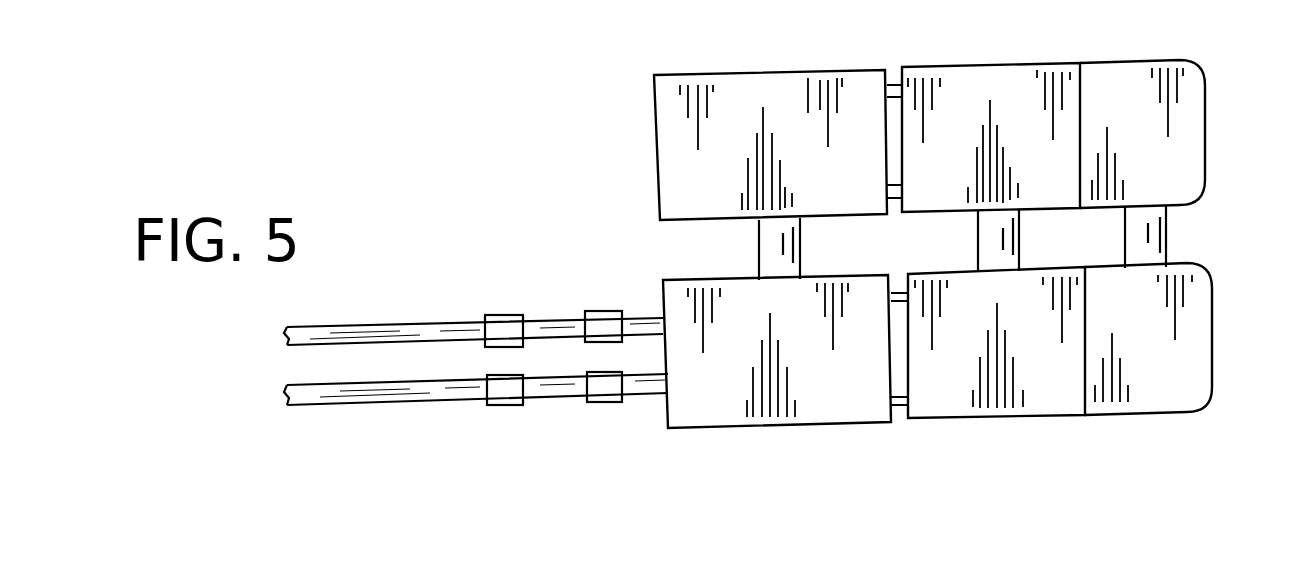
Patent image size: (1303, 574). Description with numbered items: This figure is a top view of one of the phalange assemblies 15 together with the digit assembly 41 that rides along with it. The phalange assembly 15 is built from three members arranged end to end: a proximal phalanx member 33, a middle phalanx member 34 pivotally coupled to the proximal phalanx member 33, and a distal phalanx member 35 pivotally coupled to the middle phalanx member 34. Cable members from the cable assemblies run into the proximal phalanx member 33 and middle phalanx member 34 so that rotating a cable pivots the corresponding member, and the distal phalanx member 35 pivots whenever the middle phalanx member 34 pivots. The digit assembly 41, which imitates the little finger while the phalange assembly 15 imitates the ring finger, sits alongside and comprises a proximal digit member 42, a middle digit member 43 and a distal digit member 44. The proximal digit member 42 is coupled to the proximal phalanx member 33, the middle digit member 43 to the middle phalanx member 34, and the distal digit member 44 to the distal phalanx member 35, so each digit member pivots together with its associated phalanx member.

The phalange assembly 15 is at (1225, 337).
The proximal phalanx member 33 is at (812, 400).
The middle phalanx member 34 is at (948, 397).
The distal phalanx member 35 is at (1170, 387).
The digit assembly 41 is at (1214, 54).
The proximal digit member 42 is at (773, 115).
The middle digit member 43 is at (987, 90).
The distal digit member 44 is at (1135, 90).